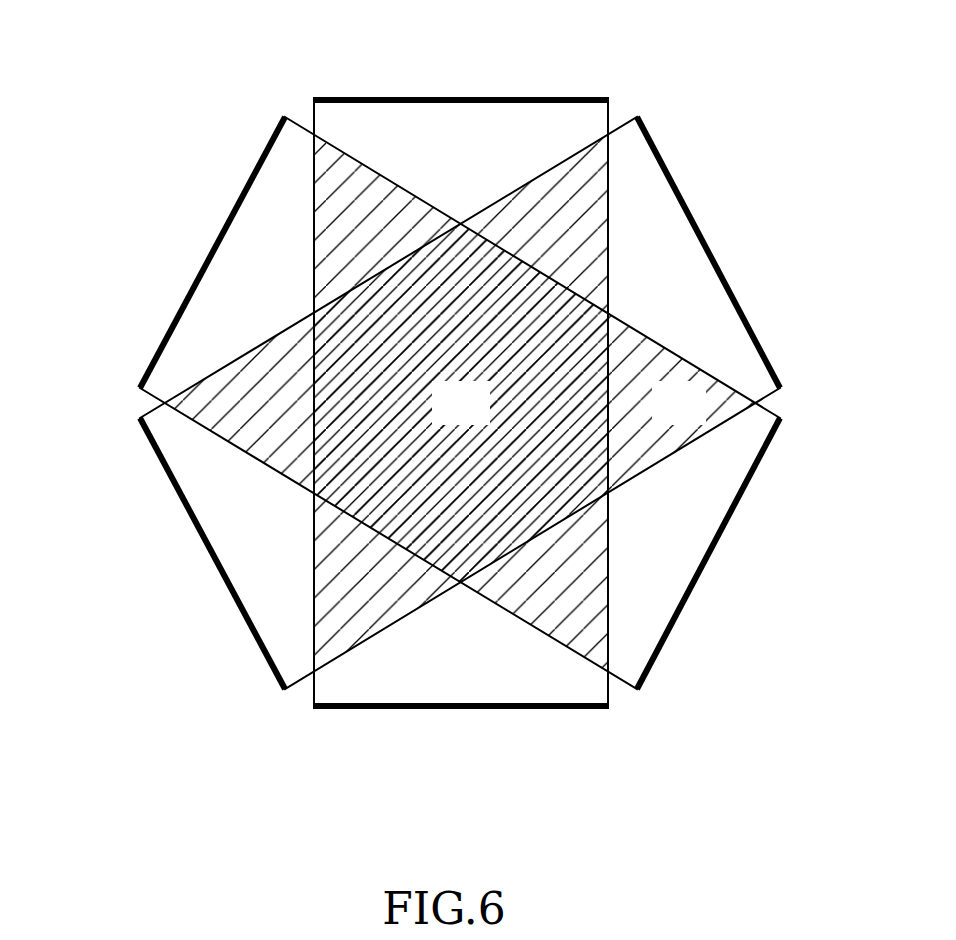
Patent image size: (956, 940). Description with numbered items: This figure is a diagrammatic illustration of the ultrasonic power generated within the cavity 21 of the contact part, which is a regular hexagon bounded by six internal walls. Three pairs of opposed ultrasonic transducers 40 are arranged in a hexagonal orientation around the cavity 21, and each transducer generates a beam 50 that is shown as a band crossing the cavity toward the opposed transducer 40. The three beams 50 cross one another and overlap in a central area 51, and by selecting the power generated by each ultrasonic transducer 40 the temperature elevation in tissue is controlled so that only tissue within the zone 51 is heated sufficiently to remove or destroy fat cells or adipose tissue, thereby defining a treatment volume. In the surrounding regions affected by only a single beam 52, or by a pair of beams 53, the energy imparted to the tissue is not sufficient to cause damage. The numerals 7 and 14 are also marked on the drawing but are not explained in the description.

The ultrasonic transducer 40 is at (440, 98).
The beam 50 is at (273, 197).
The central area 51 is at (457, 567).
The area affected by a single beam 52 is at (383, 682).
The area affected by a pair of beams 53 is at (597, 633).
The single-layer region value 7 is at (461, 162).
The cavity 21 is at (461, 403).
The side overlap region value 14 is at (460, 403).